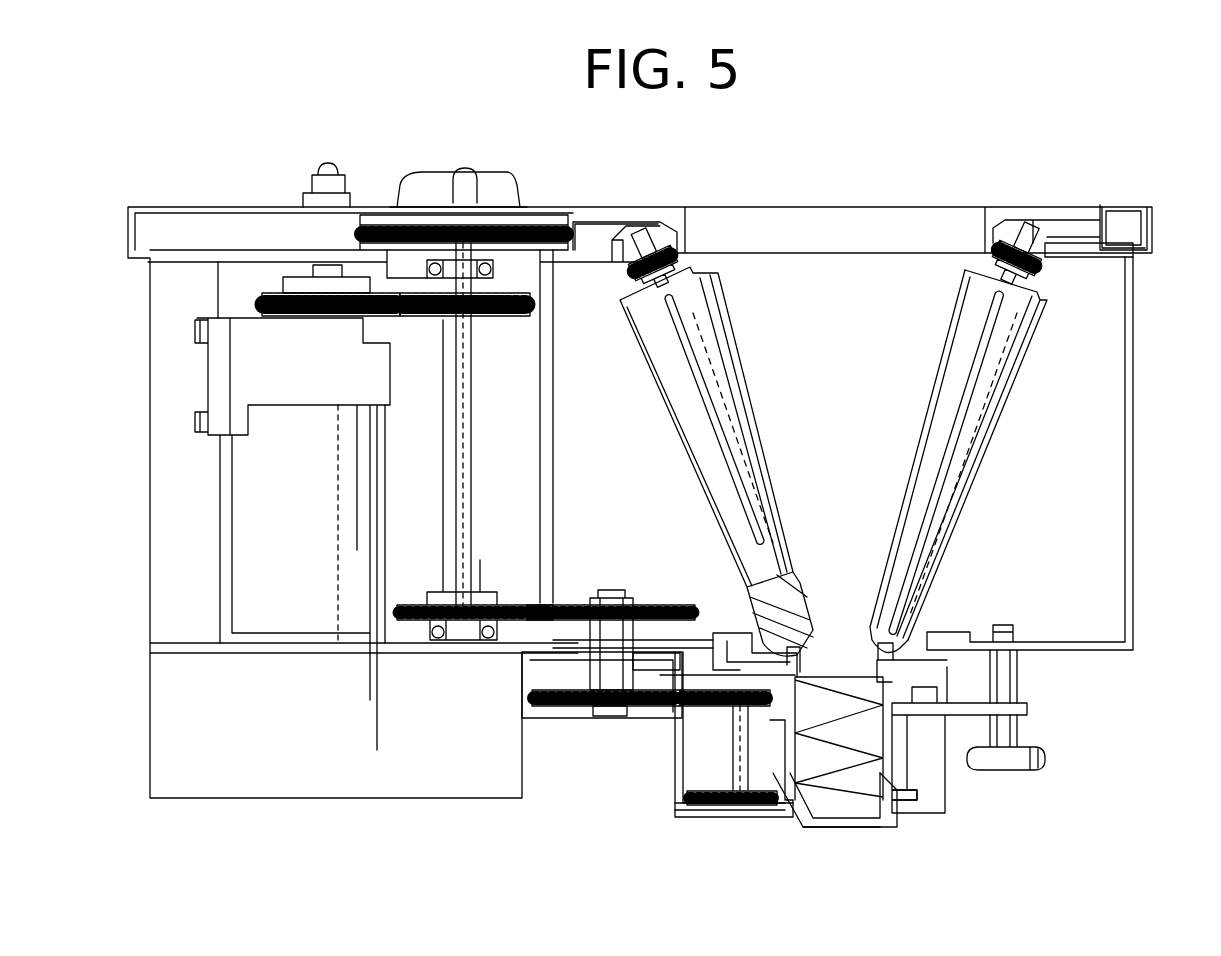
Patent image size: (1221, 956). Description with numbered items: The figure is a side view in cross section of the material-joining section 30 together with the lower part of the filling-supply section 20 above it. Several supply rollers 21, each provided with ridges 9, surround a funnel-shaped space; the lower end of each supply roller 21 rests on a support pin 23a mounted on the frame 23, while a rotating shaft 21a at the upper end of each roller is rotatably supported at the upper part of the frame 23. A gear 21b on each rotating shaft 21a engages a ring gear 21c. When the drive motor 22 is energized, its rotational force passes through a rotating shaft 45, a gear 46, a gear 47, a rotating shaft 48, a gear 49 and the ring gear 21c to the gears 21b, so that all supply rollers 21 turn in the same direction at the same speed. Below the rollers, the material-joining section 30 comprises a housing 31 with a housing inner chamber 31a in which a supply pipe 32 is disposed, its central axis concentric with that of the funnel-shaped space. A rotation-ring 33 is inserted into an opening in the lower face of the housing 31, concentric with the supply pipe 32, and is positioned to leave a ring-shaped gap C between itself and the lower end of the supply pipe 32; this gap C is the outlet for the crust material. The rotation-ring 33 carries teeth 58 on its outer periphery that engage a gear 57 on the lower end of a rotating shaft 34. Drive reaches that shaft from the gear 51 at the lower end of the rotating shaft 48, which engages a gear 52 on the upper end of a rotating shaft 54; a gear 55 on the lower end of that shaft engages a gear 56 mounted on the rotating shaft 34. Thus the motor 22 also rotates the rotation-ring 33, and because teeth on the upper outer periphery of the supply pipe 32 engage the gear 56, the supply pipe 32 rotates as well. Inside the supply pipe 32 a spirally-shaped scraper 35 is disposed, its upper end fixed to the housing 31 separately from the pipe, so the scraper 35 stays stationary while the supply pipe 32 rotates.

The ridges 9 is at (957, 293).
The filling-supply section 20 is at (845, 280).
The supply roller 21 is at (1022, 330).
The rotating shaft 21a is at (1020, 230).
The gear 21b is at (638, 268).
The ring gear 21c is at (677, 226).
The drive motor 22 is at (312, 607).
The frame 23 is at (1083, 650).
The support pin 23a is at (730, 667).
The material-joining section 30 is at (990, 820).
The housing 31 is at (937, 763).
The housing inner chamber 31a is at (675, 770).
The supply pipe 32 is at (890, 810).
The rotation-ring 33 is at (885, 833).
The rotating shaft 34 is at (745, 752).
The spirally-shaped scraper 35 is at (842, 673).
The rotating shaft 45 is at (350, 330).
The gear 46 is at (280, 293).
The gear 47 is at (500, 316).
The rotating shaft 48 is at (455, 482).
The gear 49 is at (540, 235).
The gear 51 is at (513, 603).
The gear 52 is at (570, 610).
The rotating shaft 54 is at (585, 670).
The gear 55 is at (582, 707).
The gear 56 is at (705, 705).
The gear 57 is at (730, 805).
The teeth 58 is at (777, 817).
The ring-shaped gap C is at (807, 820).